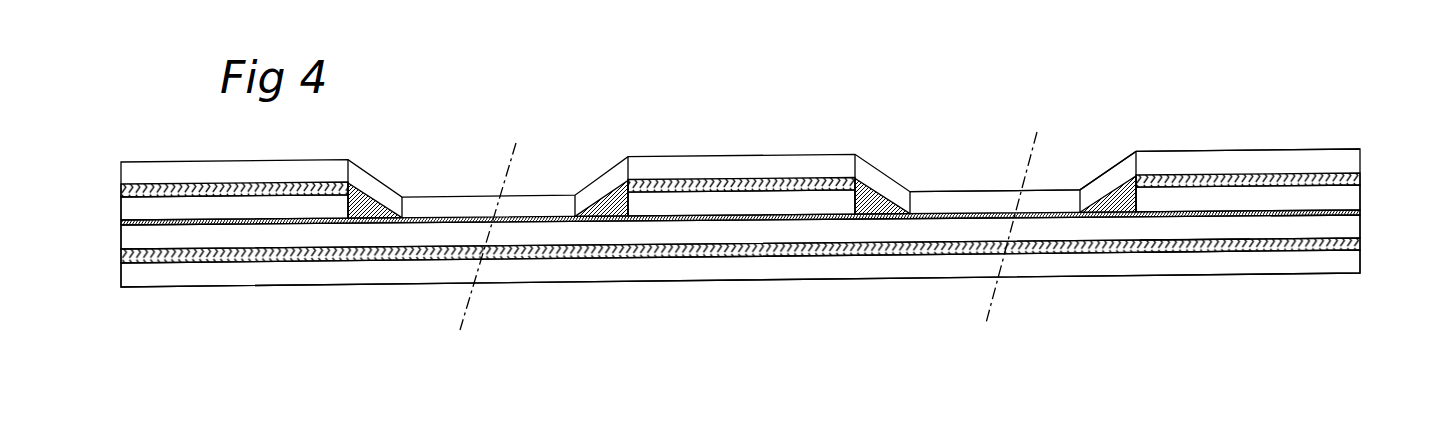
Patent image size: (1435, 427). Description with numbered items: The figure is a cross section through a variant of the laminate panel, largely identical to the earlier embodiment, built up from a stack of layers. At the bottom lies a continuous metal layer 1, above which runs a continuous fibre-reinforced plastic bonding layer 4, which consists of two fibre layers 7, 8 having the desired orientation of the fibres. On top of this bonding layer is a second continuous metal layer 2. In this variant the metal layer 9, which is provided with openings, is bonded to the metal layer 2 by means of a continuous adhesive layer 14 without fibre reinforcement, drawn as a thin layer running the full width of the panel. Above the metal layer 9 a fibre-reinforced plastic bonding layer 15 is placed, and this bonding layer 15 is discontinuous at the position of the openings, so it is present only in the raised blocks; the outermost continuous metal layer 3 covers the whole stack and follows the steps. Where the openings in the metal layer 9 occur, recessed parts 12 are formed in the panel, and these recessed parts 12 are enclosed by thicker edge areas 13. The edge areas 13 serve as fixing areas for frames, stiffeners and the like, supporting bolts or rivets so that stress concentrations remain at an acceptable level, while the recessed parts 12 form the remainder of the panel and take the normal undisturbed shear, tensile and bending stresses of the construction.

The metal layer 1 is at (1327, 263).
The metal layer 2 is at (1353, 228).
The metal layer 3 is at (1342, 162).
The fibre-reinforced plastic bonding layer 4 is at (1362, 248).
The fibre layer 7 is at (1203, 253).
The fibre layer 8 is at (1190, 246).
The metal layer 9 is at (1350, 197).
The recessed part 12 is at (973, 179).
The edge area 13 is at (1227, 149).
The adhesive layer 14 is at (1362, 211).
The fibre-reinforced plastic bonding layer 15 is at (1362, 173).